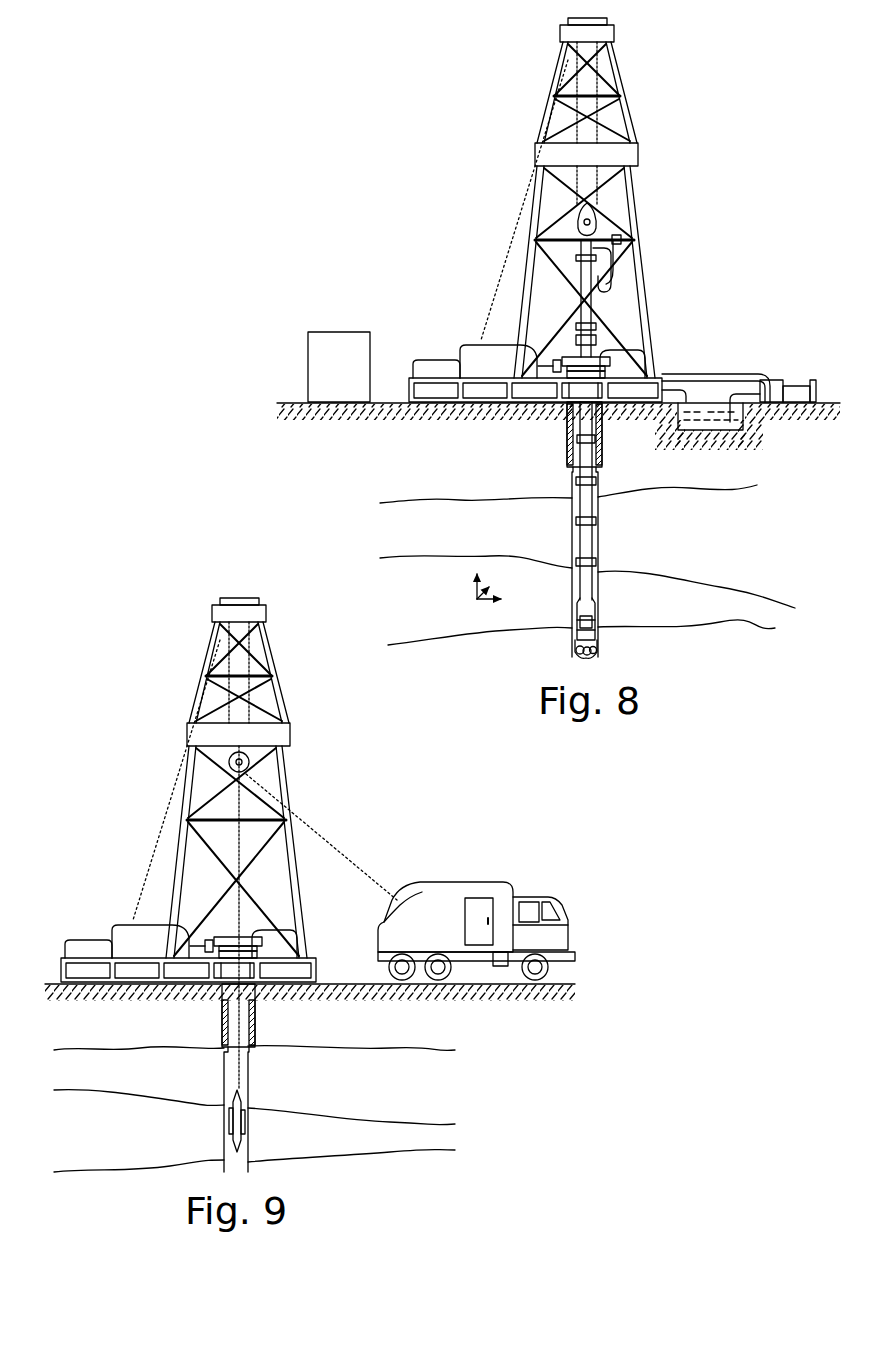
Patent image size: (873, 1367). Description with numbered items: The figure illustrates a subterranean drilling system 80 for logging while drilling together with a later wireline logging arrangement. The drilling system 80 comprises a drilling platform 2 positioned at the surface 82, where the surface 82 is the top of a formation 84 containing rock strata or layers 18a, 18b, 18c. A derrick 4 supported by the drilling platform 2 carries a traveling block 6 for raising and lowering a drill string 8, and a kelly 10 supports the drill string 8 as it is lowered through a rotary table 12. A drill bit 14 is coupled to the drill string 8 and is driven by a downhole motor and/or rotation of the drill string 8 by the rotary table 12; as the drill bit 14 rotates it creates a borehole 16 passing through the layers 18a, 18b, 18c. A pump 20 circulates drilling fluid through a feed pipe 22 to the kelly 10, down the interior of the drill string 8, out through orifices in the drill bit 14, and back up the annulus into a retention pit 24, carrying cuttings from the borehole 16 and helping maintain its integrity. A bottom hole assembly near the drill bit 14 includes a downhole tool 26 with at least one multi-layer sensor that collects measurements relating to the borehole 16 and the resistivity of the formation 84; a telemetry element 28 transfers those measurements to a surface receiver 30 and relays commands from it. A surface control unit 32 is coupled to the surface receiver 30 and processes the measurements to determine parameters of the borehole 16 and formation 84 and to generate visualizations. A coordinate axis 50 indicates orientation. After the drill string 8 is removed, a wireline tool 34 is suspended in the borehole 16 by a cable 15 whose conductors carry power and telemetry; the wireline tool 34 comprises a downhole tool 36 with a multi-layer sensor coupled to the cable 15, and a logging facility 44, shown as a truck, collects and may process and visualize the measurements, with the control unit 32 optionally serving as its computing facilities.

In FIG. 8, the drilling platform 2 is at (409, 384).
In FIG. 9, the drilling platform 2 is at (316, 970).
In FIG. 8, the derrick 4 is at (626, 118).
In FIG. 9, the derrick 4 is at (300, 882).
In FIG. 8, the traveling block 6 is at (600, 217).
In FIG. 9, the traveling block 6 is at (247, 755).
In FIG. 8, the drill string 8 is at (587, 490).
In FIG. 8, the kelly 10 is at (586, 270).
In FIG. 8, the rotary table 12 is at (604, 357).
In FIG. 9, the rotary table 12 is at (258, 940).
In FIG. 8, the drill bit 14 is at (598, 655).
In FIG. 9, the cable 15 is at (236, 1025).
In FIG. 8, the borehole 16 is at (615, 497).
In FIG. 9, the borehole 16 is at (244, 1070).
In FIG. 8, the rock strata or layer 18a is at (414, 593).
In FIG. 9, the rock strata or layer 18a is at (412, 1036).
In FIG. 8, the rock strata or layer 18b is at (587, 559).
In FIG. 9, the rock strata or layer 18b is at (92, 1081).
In FIG. 8, the rock strata or layer 18c is at (742, 484).
In FIG. 9, the rock strata or layer 18c is at (90, 1158).
In FIG. 8, the pump 20 is at (770, 380).
In FIG. 8, the feed pipe 22 is at (706, 372).
In FIG. 8, the retention pit 24 is at (716, 422).
In FIG. 8, the downhole tool 26 is at (582, 624).
In FIG. 8, the telemetry element 28 is at (584, 608).
In FIG. 8, the surface receiver 30 is at (598, 322).
In FIG. 8, the surface control unit 32 is at (351, 374).
In FIG. 9, the wireline tool 34 is at (232, 1105).
In FIG. 9, the downhole tool 36 is at (230, 1122).
In FIG. 9, the logging facility 44 is at (458, 882).
In FIG. 8, the coordinate system 50 is at (470, 594).
In FIG. 8, the subterranean drilling system 80 is at (716, 166).
In FIG. 8, the surface 82 is at (292, 402).
In FIG. 9, the surface 82 is at (60, 983).
In FIG. 8, the formation 84 is at (336, 476).
In FIG. 9, the formation 84 is at (537, 1061).